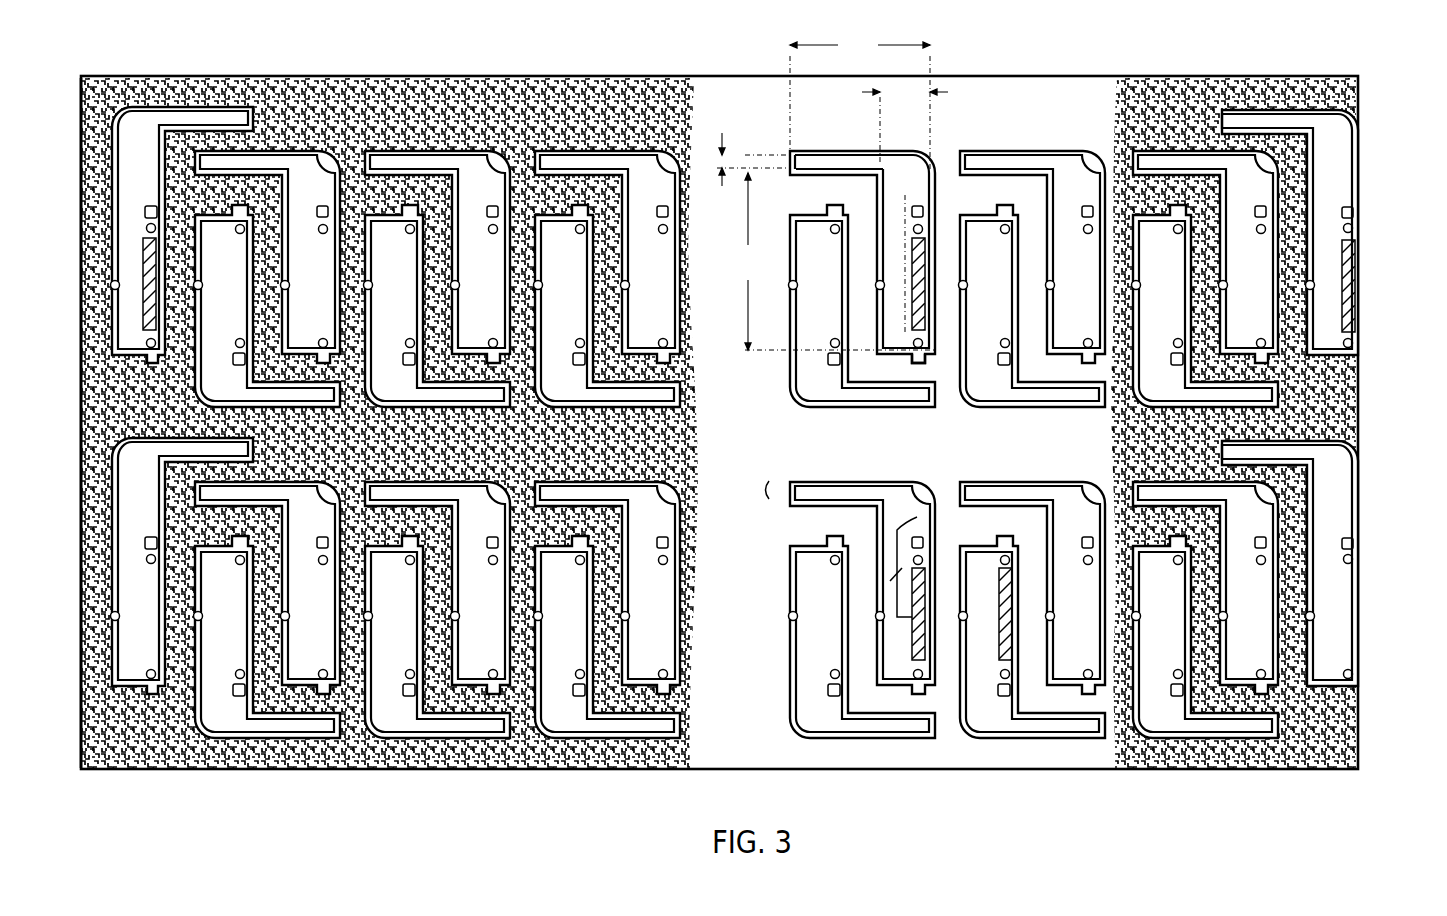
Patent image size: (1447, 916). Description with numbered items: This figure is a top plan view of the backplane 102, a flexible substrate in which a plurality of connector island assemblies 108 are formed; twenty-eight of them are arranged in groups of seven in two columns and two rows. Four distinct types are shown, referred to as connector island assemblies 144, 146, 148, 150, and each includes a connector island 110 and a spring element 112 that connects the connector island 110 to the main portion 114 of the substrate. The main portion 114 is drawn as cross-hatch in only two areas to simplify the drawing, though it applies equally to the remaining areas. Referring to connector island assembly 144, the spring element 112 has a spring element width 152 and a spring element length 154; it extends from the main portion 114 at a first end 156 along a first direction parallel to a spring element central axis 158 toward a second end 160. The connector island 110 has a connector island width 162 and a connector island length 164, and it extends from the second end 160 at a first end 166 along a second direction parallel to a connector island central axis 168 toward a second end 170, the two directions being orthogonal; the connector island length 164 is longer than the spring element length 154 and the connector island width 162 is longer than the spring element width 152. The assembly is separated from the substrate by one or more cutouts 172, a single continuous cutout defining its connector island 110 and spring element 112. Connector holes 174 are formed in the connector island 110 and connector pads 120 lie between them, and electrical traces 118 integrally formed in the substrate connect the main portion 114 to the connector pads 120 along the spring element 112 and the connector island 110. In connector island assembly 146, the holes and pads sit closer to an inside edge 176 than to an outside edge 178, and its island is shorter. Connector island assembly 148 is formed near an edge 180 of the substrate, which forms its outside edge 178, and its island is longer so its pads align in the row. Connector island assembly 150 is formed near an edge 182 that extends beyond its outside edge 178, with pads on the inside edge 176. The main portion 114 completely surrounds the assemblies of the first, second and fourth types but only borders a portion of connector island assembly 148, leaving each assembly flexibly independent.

The backplane 102 is at (457, 74).
The connector island assemblies 108 is at (588, 143).
The connector island 110 is at (765, 368).
The spring element 112 is at (808, 429).
The main portion 114 is at (633, 76).
The electrical traces 118 is at (780, 492).
The connector pads 120 is at (1360, 236).
The connector island assembly 144 is at (955, 112).
The connector island assembly 146 is at (958, 534).
The connector island assembly 148 is at (1374, 196).
The connector island assembly 150 is at (258, 120).
The spring element width 152 is at (747, 171).
The spring element length 154 is at (860, 102).
The first end 156 is at (792, 158).
The spring element central axis 158 is at (842, 160).
The second end 160 is at (928, 155).
The connector island width 162 is at (887, 122).
The connector island length 164 is at (833, 261).
The first end 166 is at (922, 182).
The connector island central axis 168 is at (903, 318).
The second end 170 is at (930, 345).
The cutouts 172 is at (938, 235).
The connector holes 174 is at (918, 230).
The inside edge 176 is at (1168, 529).
The outside edge 178 is at (970, 560).
The edge 180 is at (1363, 413).
The edge 182 is at (83, 97).